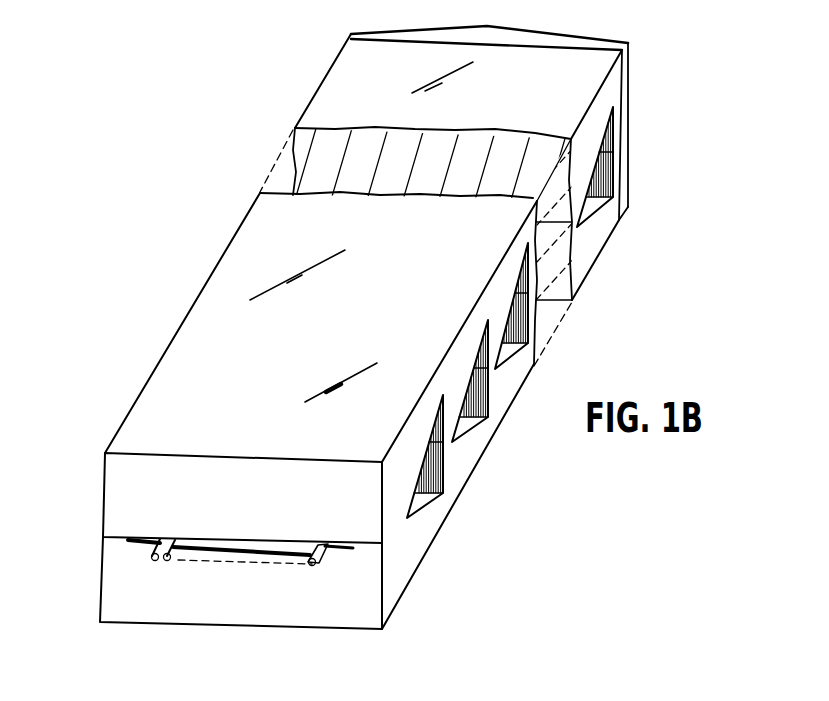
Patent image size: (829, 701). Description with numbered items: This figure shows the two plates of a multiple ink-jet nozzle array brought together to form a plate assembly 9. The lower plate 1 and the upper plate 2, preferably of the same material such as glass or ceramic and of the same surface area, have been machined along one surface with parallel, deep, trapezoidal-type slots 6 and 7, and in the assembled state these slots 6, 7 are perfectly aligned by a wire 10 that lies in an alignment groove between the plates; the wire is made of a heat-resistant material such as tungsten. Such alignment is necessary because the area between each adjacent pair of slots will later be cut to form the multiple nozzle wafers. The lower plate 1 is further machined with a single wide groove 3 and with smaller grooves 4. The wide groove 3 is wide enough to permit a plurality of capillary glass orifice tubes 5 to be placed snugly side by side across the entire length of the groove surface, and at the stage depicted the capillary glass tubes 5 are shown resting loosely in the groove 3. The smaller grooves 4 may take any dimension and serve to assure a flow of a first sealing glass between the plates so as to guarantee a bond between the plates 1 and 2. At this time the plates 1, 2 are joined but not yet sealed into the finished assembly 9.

The plate 1 is at (428, 535).
The plate 2 is at (117, 504).
The wide groove 3 is at (188, 557).
The smaller grooves 4 is at (137, 542).
The capillary glass orifice tubes 5 is at (168, 560).
The trapezoidal slot 6 is at (613, 173).
The trapezoidal slot 7 is at (600, 122).
The plate assembly 9 is at (628, 240).
The wire 10 is at (390, 40).